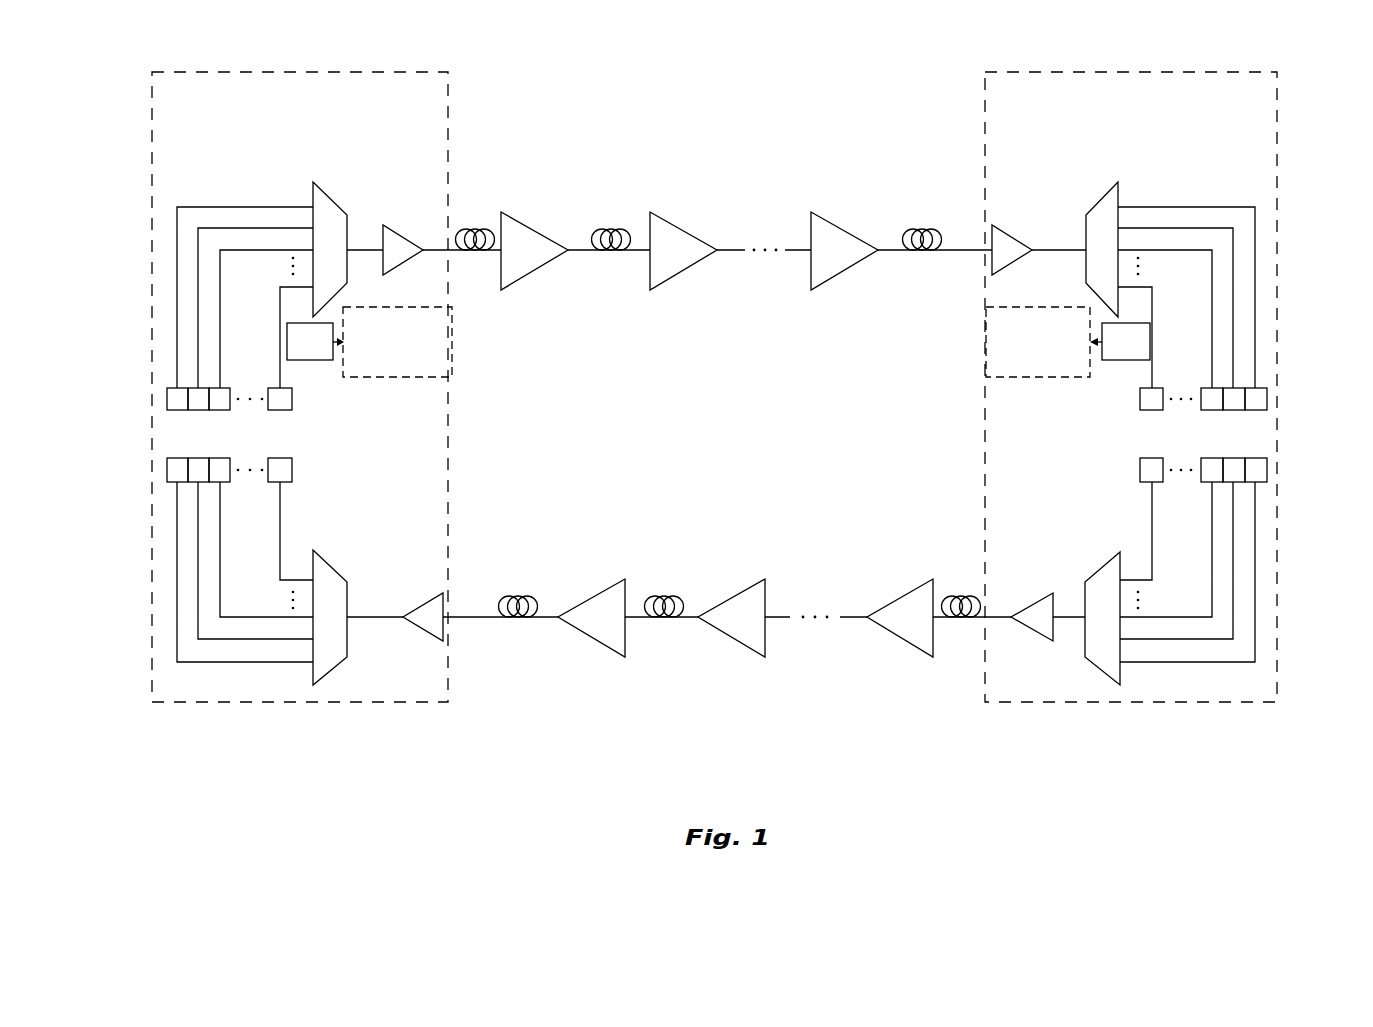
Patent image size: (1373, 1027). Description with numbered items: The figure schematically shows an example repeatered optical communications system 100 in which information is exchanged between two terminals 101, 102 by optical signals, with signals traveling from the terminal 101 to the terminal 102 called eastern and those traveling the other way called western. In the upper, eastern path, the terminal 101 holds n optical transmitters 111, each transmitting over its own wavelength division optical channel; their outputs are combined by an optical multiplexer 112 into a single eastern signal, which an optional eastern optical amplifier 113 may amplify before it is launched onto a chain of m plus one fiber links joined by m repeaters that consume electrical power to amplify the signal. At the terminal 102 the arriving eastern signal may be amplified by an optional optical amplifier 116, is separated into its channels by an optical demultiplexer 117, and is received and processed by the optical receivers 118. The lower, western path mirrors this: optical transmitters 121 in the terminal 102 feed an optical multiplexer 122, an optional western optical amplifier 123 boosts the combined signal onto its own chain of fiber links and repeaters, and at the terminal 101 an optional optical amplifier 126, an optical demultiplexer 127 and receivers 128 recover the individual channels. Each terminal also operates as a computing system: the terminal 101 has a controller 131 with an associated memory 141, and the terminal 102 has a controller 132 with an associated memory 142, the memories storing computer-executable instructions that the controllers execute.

The optical communications system 100 is at (720, 366).
The terminal 101 is at (277, 387).
The terminal 102 is at (1150, 387).
The optical transmitters 111 is at (277, 387).
The optical multiplexer 112 is at (330, 198).
The eastern optical amplifier 113 is at (403, 233).
The optical amplifier 116 is at (1013, 233).
The optical demultiplexer 117 is at (1096, 196).
The optical receivers 118 is at (1162, 388).
The optical transmitters 121 is at (1150, 500).
The optical multiplexer 122 is at (1102, 567).
The western optical amplifier 123 is at (1028, 633).
The optical amplifier 126 is at (425, 632).
The optical demultiplexer 127 is at (328, 567).
The receivers 128 is at (264, 500).
The controller 131 is at (397, 342).
The controller 132 is at (1038, 342).
The memory 141 is at (315, 341).
The memory 142 is at (1120, 341).